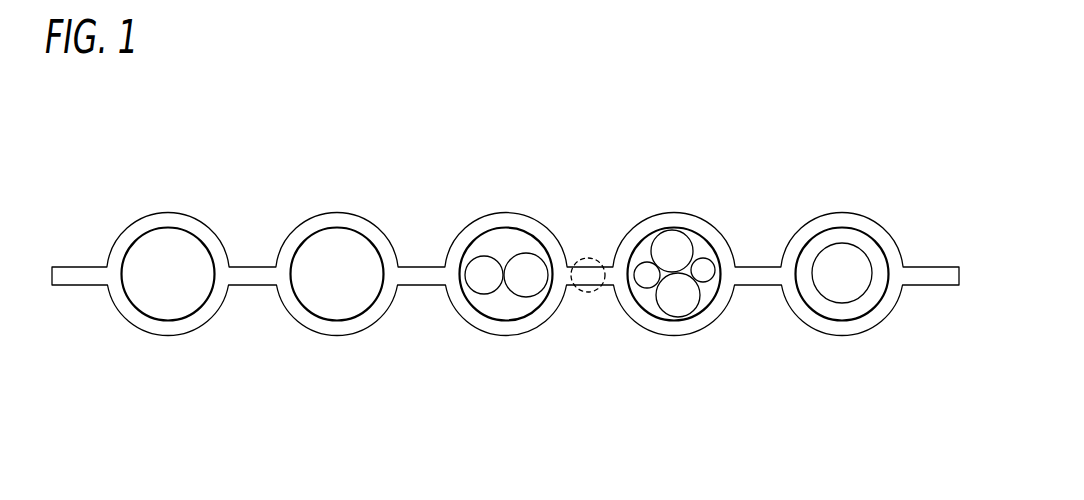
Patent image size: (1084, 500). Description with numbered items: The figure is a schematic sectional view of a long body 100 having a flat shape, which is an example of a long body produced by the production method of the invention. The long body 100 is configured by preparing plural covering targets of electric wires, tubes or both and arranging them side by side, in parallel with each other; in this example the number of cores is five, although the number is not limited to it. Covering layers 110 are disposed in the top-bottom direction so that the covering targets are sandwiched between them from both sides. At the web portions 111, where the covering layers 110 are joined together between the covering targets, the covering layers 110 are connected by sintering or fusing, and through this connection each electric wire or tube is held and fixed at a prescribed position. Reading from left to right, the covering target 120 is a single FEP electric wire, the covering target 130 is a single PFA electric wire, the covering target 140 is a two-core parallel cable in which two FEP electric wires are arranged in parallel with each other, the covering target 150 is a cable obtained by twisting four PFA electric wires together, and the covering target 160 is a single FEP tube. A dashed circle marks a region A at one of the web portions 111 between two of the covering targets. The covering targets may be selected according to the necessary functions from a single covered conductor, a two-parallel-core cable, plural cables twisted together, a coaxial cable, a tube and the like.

The long body 100 is at (433, 200).
The covering layers 110 is at (698, 218).
The web portions 111 is at (247, 272).
The covering target 120 is at (175, 298).
The covering target 130 is at (363, 318).
The covering target 140 is at (485, 315).
The covering target 150 is at (670, 313).
The covering target 160 is at (831, 307).
The region A is at (583, 295).